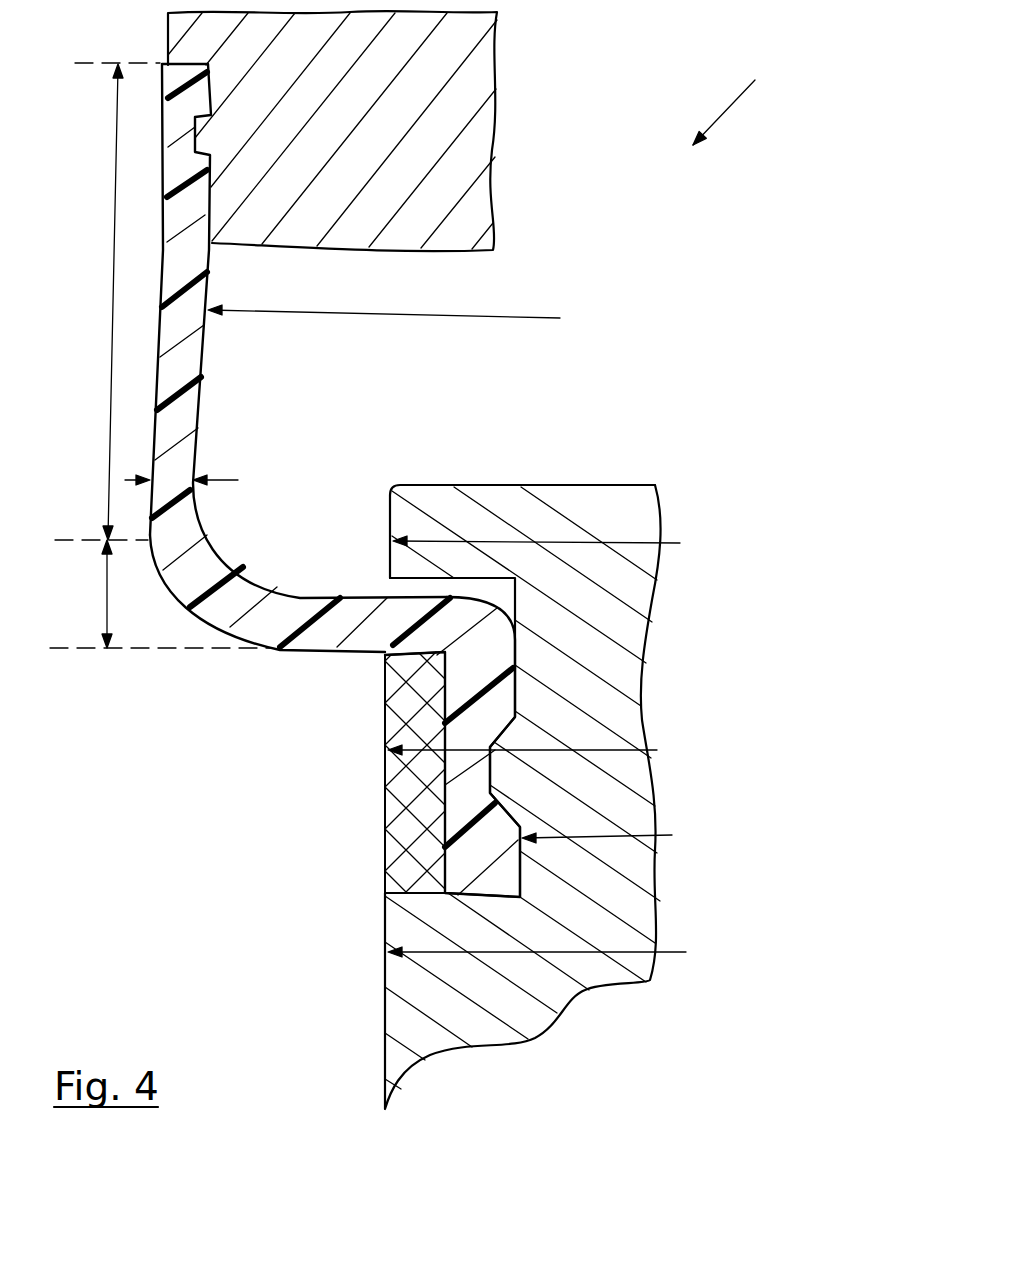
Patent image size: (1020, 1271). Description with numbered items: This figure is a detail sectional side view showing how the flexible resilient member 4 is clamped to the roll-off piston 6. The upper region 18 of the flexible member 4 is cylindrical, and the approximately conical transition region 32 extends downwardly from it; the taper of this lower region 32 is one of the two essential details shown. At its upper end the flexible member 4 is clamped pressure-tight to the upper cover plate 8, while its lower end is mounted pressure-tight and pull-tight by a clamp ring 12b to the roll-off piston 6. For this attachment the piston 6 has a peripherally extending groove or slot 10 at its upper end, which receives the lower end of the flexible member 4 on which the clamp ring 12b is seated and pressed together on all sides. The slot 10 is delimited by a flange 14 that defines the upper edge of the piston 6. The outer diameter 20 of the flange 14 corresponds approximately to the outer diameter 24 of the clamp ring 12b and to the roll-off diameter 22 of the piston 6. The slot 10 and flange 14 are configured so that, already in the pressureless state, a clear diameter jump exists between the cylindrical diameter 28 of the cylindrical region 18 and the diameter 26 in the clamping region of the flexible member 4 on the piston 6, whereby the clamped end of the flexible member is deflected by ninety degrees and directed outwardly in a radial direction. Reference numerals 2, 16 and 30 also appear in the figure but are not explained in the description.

The sealing arrangement 2 is at (735, 94).
The flexible resilient member 4 is at (190, 358).
The roll-off piston 6 is at (645, 590).
The upper cover plate 8 is at (470, 77).
The peripherally extending groove or slot 10 is at (522, 692).
The clamp ring 12b is at (413, 778).
The flange 14 is at (448, 503).
The bend of sealing ring 16 is at (245, 650).
The upper region of the flexible member 18 is at (107, 301).
The outer diameter of the flange 20 is at (820, 543).
The roll-off diameter of the piston 22 is at (822, 950).
The outer diameter of the clamp ring 24 is at (832, 748).
The diameter in the clamping region 26 is at (838, 835).
The cylindrical diameter 28 is at (765, 318).
The wall thickness of sealing ring 30 is at (172, 482).
The conical transition region 32 is at (160, 594).